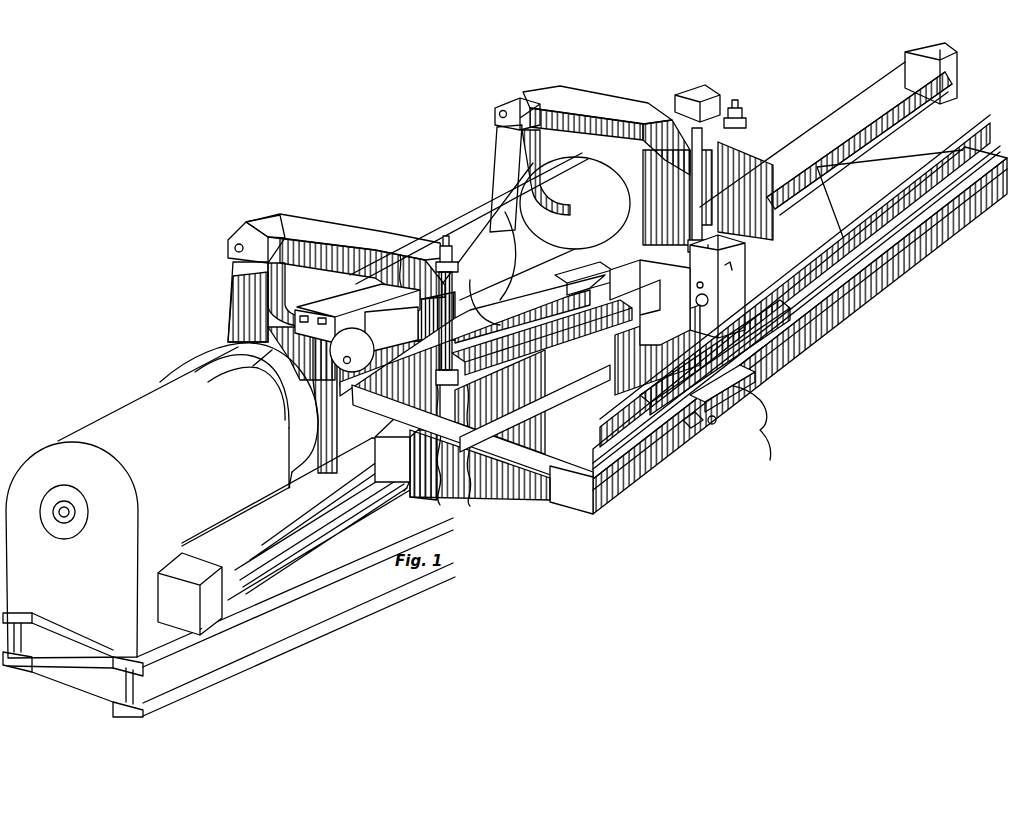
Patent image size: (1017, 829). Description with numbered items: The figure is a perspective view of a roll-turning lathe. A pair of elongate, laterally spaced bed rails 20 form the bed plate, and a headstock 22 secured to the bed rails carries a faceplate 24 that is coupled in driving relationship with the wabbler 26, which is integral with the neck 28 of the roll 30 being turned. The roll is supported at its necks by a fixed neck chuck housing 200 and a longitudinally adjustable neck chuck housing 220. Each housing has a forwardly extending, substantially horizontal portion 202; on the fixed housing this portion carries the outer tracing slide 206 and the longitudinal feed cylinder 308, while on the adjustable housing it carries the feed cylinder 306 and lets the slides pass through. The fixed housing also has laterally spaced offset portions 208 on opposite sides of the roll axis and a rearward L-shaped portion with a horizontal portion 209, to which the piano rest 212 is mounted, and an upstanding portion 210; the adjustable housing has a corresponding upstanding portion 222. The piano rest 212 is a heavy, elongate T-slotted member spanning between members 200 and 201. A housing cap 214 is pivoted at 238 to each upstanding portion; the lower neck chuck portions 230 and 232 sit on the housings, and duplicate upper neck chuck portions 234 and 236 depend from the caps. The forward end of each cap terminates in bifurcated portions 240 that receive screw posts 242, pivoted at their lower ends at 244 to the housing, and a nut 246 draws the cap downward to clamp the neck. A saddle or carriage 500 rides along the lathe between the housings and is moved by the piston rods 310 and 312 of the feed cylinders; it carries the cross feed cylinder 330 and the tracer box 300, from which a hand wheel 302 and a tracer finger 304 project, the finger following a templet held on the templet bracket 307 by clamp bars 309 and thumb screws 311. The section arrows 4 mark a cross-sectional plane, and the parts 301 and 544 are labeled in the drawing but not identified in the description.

The section line 4- 4 is at (353, 151).
The bed rails 20 is at (75, 688).
The headstock 22 is at (135, 398).
The faceplate 24 is at (240, 355).
The wabbler 26 is at (322, 398).
The neck 28 is at (630, 180).
The roll 30 is at (510, 212).
The fixed neck chuck housing 200 is at (533, 503).
The member 201 is at (935, 160).
The forwardly extending horizontal portion 202 is at (860, 275).
The outer tracing slide 206 is at (605, 466).
The offset portions 208 is at (272, 380).
The horizontal portion 209 is at (252, 366).
The upstanding portion 210 is at (243, 280).
The piano rest 212 is at (312, 305).
The housing cap 214 is at (355, 228).
The longitudinally adjustable neck chuck housing 220 is at (790, 320).
The upstanding portion 222 is at (505, 143).
The lower neck chuck portion 230 is at (540, 305).
The lower neck chuck portion 232 is at (640, 200).
The upper neck chuck portion 234 is at (410, 245).
The upper neck chuck portion 236 is at (655, 112).
The pivot 238 is at (230, 244).
The bifurcated portions 240 is at (465, 270).
The screw posts 242 is at (708, 150).
The pivot 244 is at (417, 453).
The nut 246 is at (740, 111).
The tracer box 300 is at (640, 240).
The control bracket 301 is at (620, 262).
The hand wheel 302 is at (750, 365).
The tracer finger 304 is at (720, 398).
The longitudinal feed cylinder 306 is at (815, 132).
The templet bracket 307 is at (693, 426).
The longitudinal feed cylinder 308 is at (235, 543).
The clamp bars 309 is at (718, 425).
The piston rod 310 is at (790, 205).
The thumb screws 311 is at (738, 412).
The piston rod 312 is at (488, 453).
The cross feed cylinder 330 is at (640, 445).
The saddle or carriage 500 is at (540, 410).
The bracket 544 is at (576, 278).